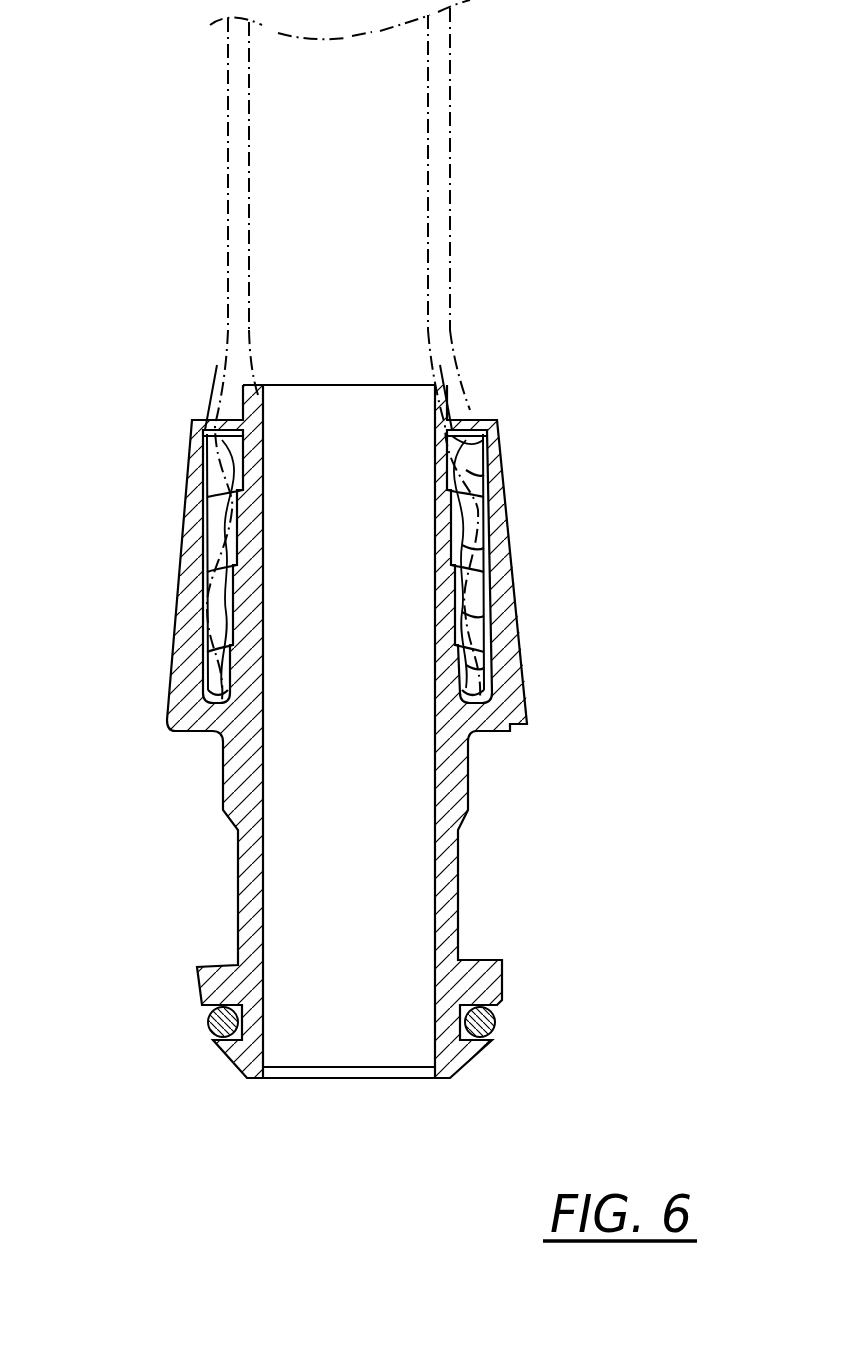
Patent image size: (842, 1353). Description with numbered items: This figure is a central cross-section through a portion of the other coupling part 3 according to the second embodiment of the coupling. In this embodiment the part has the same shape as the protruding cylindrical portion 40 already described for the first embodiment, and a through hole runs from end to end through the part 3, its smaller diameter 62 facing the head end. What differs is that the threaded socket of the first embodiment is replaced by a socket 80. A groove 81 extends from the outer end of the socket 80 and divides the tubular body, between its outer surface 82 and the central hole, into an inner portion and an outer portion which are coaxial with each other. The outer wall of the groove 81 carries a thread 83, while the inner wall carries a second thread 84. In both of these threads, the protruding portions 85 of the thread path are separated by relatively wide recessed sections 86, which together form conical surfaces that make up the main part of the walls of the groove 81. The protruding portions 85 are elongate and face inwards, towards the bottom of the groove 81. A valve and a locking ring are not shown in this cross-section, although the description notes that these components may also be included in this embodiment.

The other coupling part 3 is at (243, 1108).
The protruding cylindrical portion 40 is at (200, 861).
The smaller diameter 62 is at (258, 408).
The socket 80 is at (486, 368).
The groove 81 is at (486, 420).
The outer surface 82 is at (183, 543).
The thread 83 is at (483, 488).
The second thread 84 is at (483, 540).
The protruding portions 85 is at (484, 606).
The recessed sections 86 is at (484, 688).